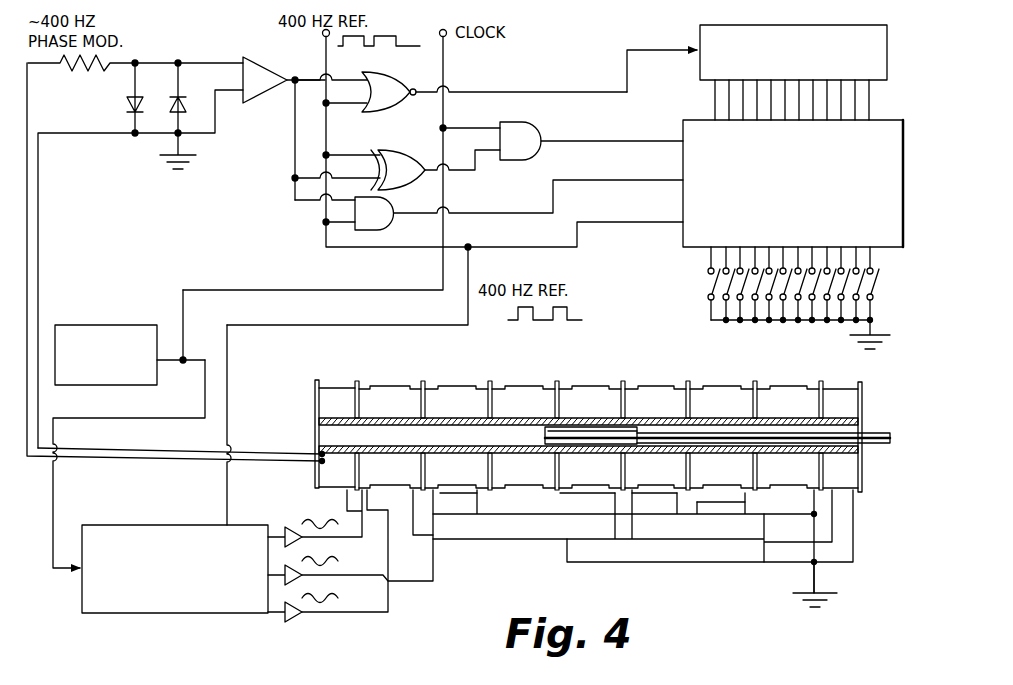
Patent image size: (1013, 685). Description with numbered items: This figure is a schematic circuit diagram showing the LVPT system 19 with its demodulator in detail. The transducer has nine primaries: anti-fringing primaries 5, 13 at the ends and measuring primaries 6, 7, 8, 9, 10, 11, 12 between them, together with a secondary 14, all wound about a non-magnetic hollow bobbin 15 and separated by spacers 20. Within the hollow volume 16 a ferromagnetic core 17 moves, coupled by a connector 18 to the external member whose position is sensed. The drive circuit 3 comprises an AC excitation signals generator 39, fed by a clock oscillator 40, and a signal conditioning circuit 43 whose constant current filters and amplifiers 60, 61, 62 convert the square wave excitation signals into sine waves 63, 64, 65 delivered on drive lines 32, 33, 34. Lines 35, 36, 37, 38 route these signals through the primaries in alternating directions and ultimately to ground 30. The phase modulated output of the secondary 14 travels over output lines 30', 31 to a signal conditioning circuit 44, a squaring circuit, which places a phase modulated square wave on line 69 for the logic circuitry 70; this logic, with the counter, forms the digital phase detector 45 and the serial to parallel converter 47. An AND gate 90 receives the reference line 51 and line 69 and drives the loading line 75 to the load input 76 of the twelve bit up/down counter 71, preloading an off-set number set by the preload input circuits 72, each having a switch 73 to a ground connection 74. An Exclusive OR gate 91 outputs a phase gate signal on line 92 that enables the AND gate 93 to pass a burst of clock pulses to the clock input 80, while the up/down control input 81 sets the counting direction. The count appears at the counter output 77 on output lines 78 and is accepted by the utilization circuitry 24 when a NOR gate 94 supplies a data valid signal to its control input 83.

The drive circuit 3 is at (214, 521).
The anti-fringing primary 5 is at (327, 386).
The first measuring primary 6 is at (392, 386).
The second measuring primary 7 is at (456, 386).
The third measuring primary 8 is at (522, 386).
The fourth measuring primary 9 is at (592, 386).
The fifth measuring primary 10 is at (658, 387).
The sixth measuring primary 11 is at (716, 387).
The seventh measuring primary 12 is at (783, 387).
The anti-fringing primary 13 is at (845, 390).
The secondary 14 is at (311, 401).
The bobbin 15 is at (318, 419).
The hollow volume 16 is at (352, 432).
The core 17 is at (545, 429).
The connector 18 is at (878, 432).
The LVPT system 19 is at (535, 56).
The spacer 20 is at (358, 381).
The utilization circuitry 24 is at (700, 28).
The reference ground potential 30 is at (510, 377).
The output line 30' is at (181, 273).
The output line 31 is at (36, 88).
The drive line 32 is at (391, 606).
The drive line 33 is at (436, 558).
The drive line 34 is at (345, 502).
The line 35 is at (520, 541).
The line 36 is at (588, 563).
The line 37 is at (490, 516).
The line 38 is at (705, 542).
The AC excitation signals generator 39 is at (122, 536).
The clock oscillator 40 is at (100, 325).
The signal conditioning circuit 43 is at (367, 616).
The signal conditioning circuit 44 is at (206, 62).
The digital phase detector 45 is at (292, 222).
The serial to parallel converter 47 is at (560, 86).
The reference line 51 is at (374, 326).
The filter and amplifier 60 is at (287, 620).
The filter and amplifier 61 is at (296, 568).
The filter and amplifier 62 is at (284, 533).
The sine wave 63 is at (336, 605).
The sine wave 64 is at (338, 560).
The sine wave 65 is at (308, 518).
The line 69 is at (295, 78).
The logic circuitry 70 is at (280, 97).
The counter 71 is at (690, 249).
The preload input circuits 72 is at (665, 308).
The switch 73 is at (708, 284).
The ground connection 74 is at (710, 318).
The loading line 75 is at (566, 178).
The load input 76 is at (678, 187).
The counter output 77 is at (702, 104).
The output lines 78 is at (714, 90).
The clock input 80 is at (632, 133).
The up/down control input 81 is at (680, 231).
The control input 83 is at (627, 62).
The AND gate 90 is at (384, 228).
The Exclusive OR gate 91 is at (410, 150).
The line 92 is at (470, 180).
The AND gate 93 is at (525, 124).
The NOR gate 94 is at (386, 73).